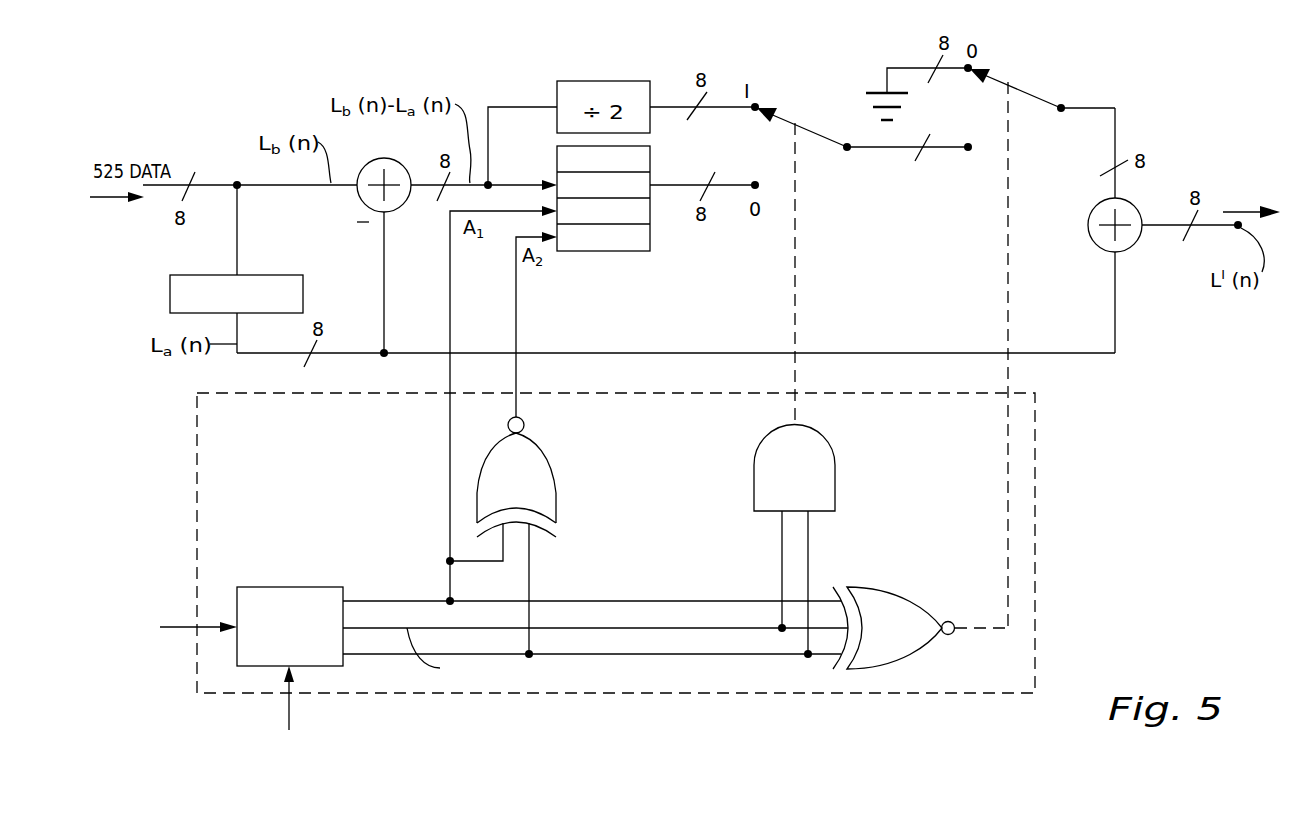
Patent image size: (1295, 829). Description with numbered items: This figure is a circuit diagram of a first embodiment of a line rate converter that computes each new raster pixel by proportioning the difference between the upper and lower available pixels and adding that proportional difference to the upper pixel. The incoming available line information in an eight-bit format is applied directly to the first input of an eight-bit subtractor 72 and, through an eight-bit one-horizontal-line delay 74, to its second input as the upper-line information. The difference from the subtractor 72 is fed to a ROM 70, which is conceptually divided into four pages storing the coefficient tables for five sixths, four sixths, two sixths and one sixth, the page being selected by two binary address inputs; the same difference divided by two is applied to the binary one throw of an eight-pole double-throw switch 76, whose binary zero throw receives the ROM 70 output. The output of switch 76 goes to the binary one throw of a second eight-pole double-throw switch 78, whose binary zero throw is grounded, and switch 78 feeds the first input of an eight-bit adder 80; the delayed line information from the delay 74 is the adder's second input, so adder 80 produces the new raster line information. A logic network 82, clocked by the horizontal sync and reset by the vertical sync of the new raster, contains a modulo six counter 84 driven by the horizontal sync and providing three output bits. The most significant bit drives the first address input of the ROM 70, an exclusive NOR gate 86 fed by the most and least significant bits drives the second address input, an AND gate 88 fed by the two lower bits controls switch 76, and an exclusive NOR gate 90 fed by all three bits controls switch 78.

The ROM 70 is at (557, 167).
The subtractor 72 is at (356, 196).
The 1H delay 74 is at (275, 275).
The eight-pole double-throw switch 76 is at (818, 128).
The eight-pole double-throw switch 78 is at (1038, 98).
The adder 80 is at (1090, 234).
The logic network 82 is at (182, 448).
The modulo 6 counter 84 is at (285, 587).
The exclusive NOR gate 86 is at (547, 462).
The AND gate 88 is at (836, 459).
The exclusive NOR gate 90 is at (908, 595).